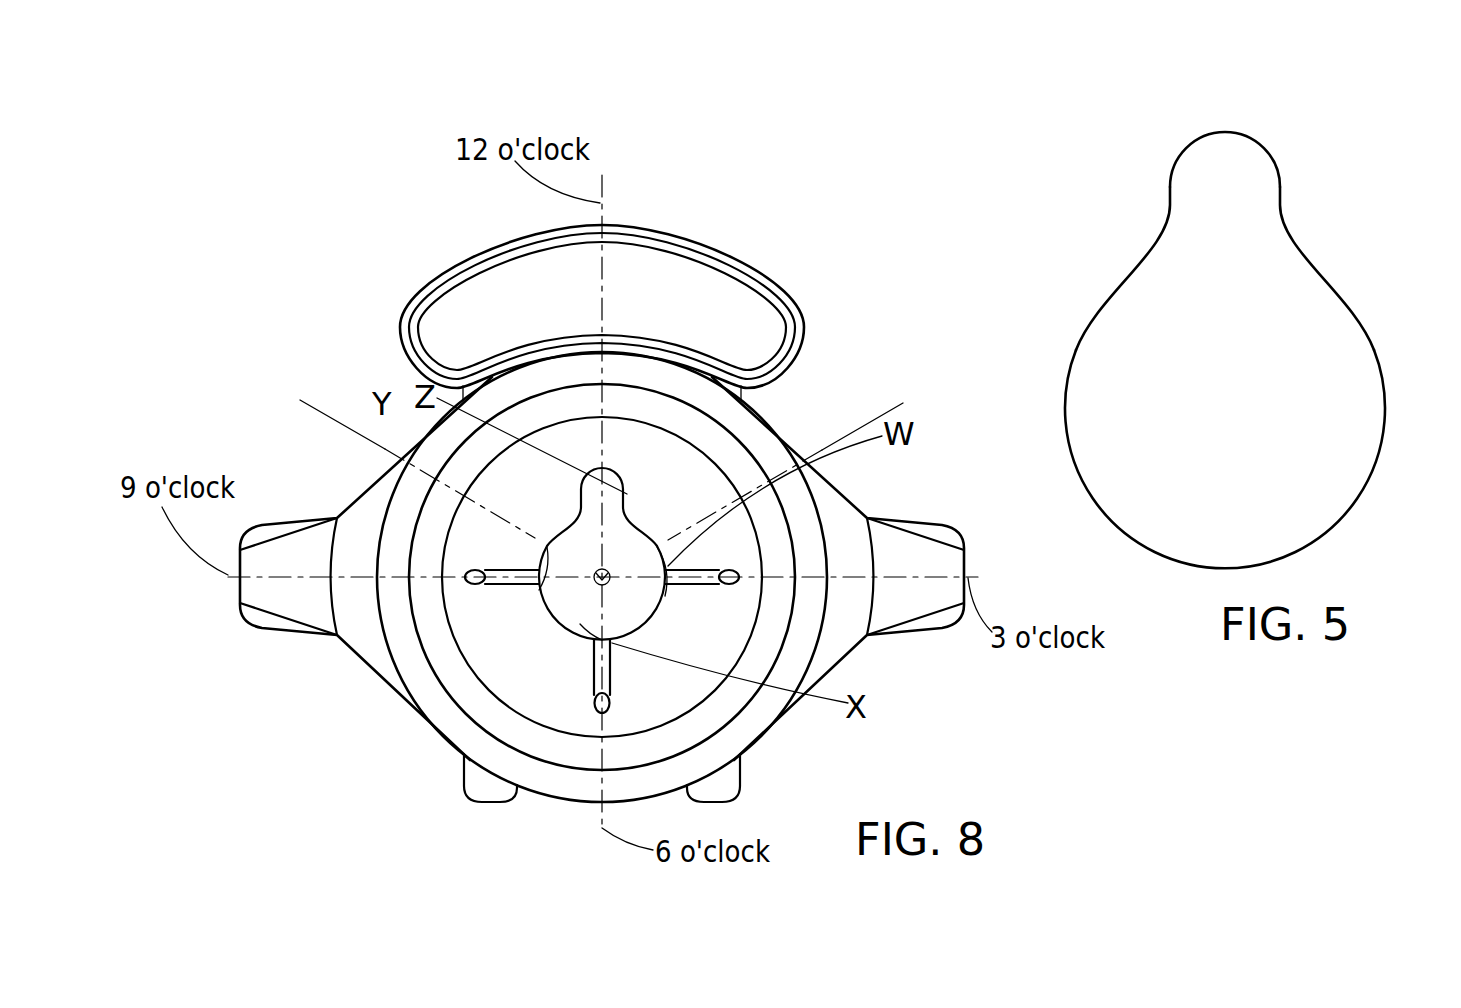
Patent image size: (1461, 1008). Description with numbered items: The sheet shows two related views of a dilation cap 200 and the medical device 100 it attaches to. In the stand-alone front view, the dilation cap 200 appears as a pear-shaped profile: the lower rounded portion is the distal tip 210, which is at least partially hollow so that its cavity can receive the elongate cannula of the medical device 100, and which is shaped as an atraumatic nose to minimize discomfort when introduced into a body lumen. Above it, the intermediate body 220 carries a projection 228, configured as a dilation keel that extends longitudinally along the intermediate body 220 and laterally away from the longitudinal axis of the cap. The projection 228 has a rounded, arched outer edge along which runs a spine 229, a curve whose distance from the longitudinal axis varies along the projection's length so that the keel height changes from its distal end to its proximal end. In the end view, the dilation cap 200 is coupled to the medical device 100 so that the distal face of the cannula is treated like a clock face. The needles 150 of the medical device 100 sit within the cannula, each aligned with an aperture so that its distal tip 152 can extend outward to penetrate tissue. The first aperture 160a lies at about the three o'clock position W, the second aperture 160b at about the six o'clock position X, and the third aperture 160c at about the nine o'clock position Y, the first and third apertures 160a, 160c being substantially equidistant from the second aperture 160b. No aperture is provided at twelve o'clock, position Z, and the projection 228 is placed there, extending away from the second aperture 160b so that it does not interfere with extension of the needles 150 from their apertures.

In FIG. 8, the medical device 100 is at (343, 354).
In FIG. 8, the needles 150 is at (473, 569).
In FIG. 8, the distal tip 152 is at (503, 568).
In FIG. 8, the first aperture 160a is at (660, 600).
In FIG. 8, the second aperture 160b is at (570, 632).
In FIG. 8, the third aperture 160c is at (537, 588).
In FIG. 8, the dilation cap 200 is at (577, 634).
In FIG. 5, the dilation cap 200 is at (1104, 190).
In FIG. 5, the distal tip 210 is at (1288, 366).
In FIG. 5, the intermediate body 220 is at (1358, 217).
In FIG. 8, the projection 228 is at (604, 467).
In FIG. 5, the projection 228 is at (1267, 205).
In FIG. 5, the spine 229 is at (1223, 128).